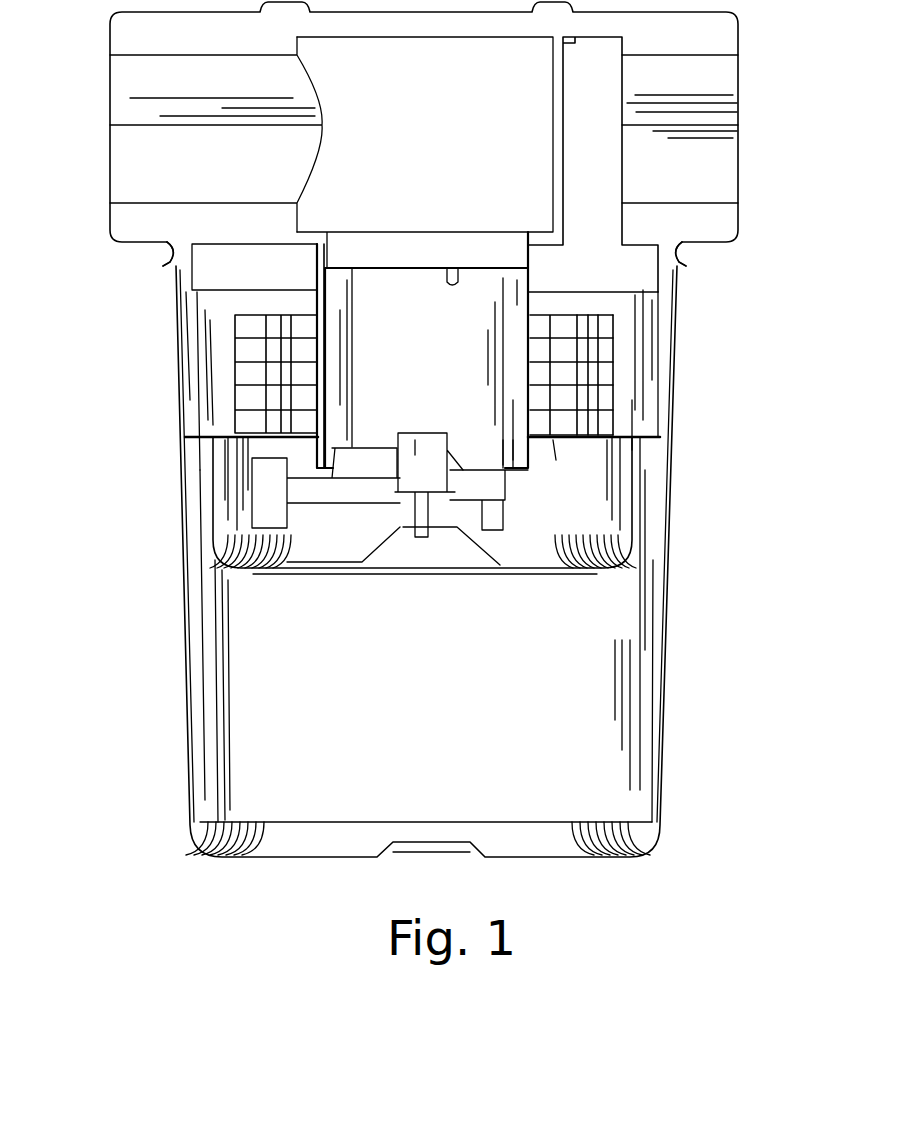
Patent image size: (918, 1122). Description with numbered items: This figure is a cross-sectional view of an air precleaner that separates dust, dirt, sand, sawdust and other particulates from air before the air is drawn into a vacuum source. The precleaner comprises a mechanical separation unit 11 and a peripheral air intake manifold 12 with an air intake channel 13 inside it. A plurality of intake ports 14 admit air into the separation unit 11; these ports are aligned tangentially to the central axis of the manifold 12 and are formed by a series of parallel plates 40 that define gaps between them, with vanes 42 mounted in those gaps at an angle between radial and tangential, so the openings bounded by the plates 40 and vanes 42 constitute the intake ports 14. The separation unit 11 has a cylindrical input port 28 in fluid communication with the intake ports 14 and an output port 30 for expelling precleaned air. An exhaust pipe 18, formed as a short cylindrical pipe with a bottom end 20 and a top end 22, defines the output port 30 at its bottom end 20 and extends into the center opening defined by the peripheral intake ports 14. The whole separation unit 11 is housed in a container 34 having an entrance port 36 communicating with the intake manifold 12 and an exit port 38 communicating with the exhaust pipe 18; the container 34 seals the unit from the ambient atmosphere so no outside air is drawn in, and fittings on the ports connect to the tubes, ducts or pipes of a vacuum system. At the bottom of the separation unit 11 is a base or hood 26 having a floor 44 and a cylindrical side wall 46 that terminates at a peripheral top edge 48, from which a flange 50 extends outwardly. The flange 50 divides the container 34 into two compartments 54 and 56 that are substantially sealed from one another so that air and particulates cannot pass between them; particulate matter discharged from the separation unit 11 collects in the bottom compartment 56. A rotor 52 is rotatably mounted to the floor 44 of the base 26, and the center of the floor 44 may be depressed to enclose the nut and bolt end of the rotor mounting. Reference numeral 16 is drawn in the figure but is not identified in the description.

The mechanical separation unit 11 is at (642, 425).
The peripheral air intake manifold 12 is at (633, 272).
The air intake channel 13 is at (600, 190).
The intake ports 14 is at (246, 329).
The inner wall 16 is at (320, 350).
The exhaust pipe 18 is at (500, 303).
The bottom end of the exhaust pipe 20 is at (508, 462).
The top end of the exhaust pipe 22 is at (380, 268).
The base or hood 26 is at (218, 563).
The input port 28 is at (558, 465).
The output port 30 is at (470, 290).
The container 34 is at (164, 282).
The entrance port 36 is at (742, 72).
The exit port 38 is at (108, 68).
The parallel plates 40 is at (612, 412).
The vanes 42 is at (545, 350).
The floor 44 is at (503, 572).
The cylindrical side wall 46 is at (626, 517).
The peripheral top edge 48 is at (630, 440).
The flange 50 is at (200, 437).
The rotor 52 is at (333, 497).
The compartment 54 is at (200, 308).
The bottom compartment 56 is at (261, 712).